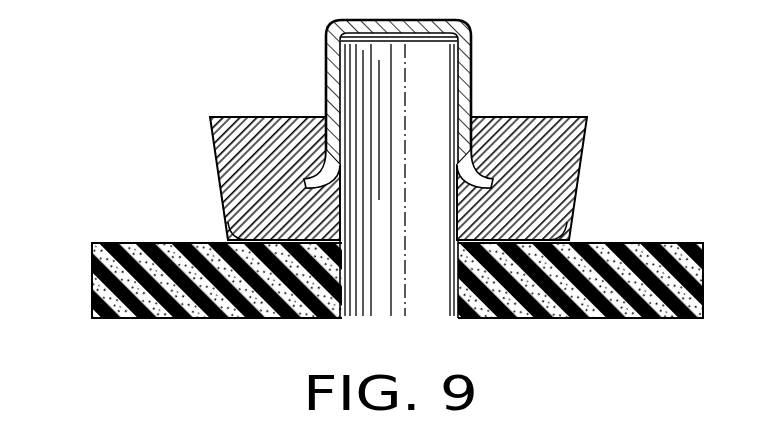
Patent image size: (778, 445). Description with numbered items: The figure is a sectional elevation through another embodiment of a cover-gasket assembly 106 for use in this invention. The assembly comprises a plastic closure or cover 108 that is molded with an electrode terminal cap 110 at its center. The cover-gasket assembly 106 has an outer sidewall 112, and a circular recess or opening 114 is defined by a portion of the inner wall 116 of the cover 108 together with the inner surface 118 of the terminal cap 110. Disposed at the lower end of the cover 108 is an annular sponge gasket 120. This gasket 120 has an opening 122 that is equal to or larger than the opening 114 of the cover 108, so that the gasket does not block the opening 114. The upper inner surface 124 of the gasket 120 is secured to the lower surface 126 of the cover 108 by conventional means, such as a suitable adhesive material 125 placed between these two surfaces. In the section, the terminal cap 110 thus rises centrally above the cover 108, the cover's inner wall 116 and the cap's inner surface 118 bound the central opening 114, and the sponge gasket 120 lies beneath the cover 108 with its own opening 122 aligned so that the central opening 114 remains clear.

The cover-gasket assembly 106 is at (296, 88).
The cover 108 is at (573, 163).
The electrode terminal cap 110 is at (466, 63).
The outer sidewall 112 is at (220, 172).
The circular recess or opening 114 is at (427, 216).
The inner wall 116 is at (345, 267).
The inner surface 118 is at (350, 46).
The annular sponge gasket 120 is at (92, 306).
The opening 122 is at (443, 308).
The upper inner surface 124 is at (230, 222).
The adhesive material 125 is at (367, 245).
The lower surface 126 is at (565, 218).